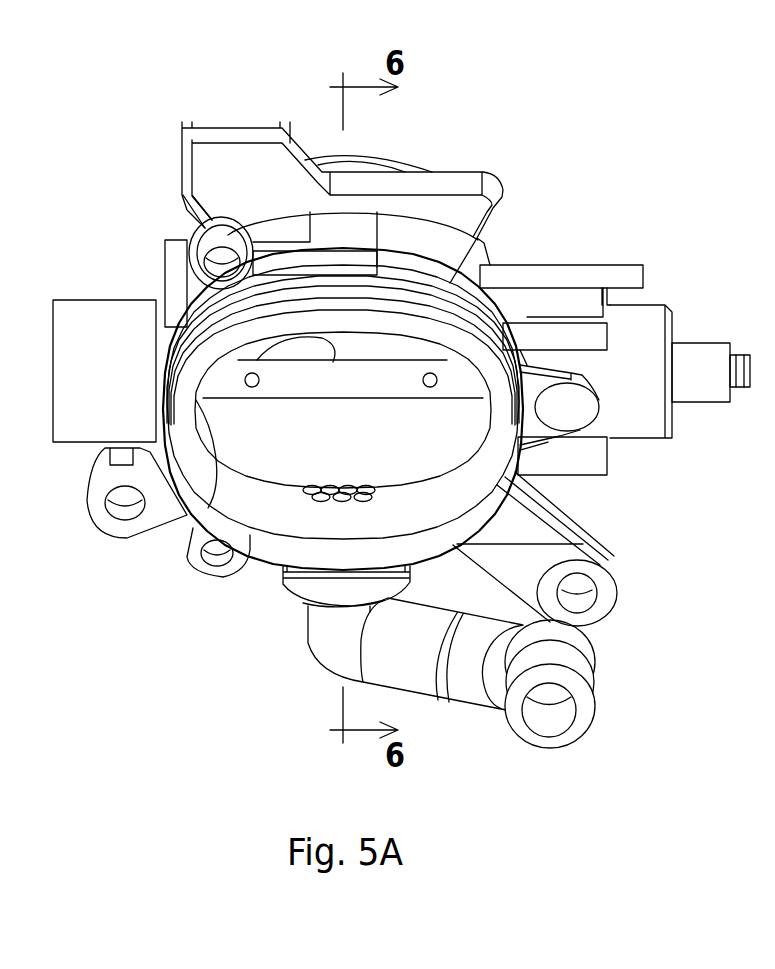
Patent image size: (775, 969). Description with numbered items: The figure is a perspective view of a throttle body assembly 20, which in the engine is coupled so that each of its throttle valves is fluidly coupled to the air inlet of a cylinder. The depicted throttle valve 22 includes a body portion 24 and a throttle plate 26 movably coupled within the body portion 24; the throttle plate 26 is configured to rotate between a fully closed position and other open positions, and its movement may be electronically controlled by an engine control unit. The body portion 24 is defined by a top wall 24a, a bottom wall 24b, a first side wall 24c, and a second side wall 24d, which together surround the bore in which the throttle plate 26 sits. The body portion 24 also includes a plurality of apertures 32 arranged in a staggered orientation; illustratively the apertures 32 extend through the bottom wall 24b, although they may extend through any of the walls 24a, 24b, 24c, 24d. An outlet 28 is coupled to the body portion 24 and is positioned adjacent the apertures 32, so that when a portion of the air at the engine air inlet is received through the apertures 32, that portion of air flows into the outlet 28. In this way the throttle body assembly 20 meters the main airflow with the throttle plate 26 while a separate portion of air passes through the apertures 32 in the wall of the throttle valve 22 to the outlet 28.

The throttle body assembly 20 is at (558, 160).
The throttle valve 22 is at (259, 505).
The body portion 24 is at (503, 240).
The top wall 24a is at (255, 358).
The bottom wall 24b is at (313, 520).
The first side wall 24c is at (187, 513).
The second side wall 24d is at (473, 467).
The throttle plate 26 is at (363, 455).
The outlet 28 is at (323, 641).
The apertures 32 is at (354, 504).